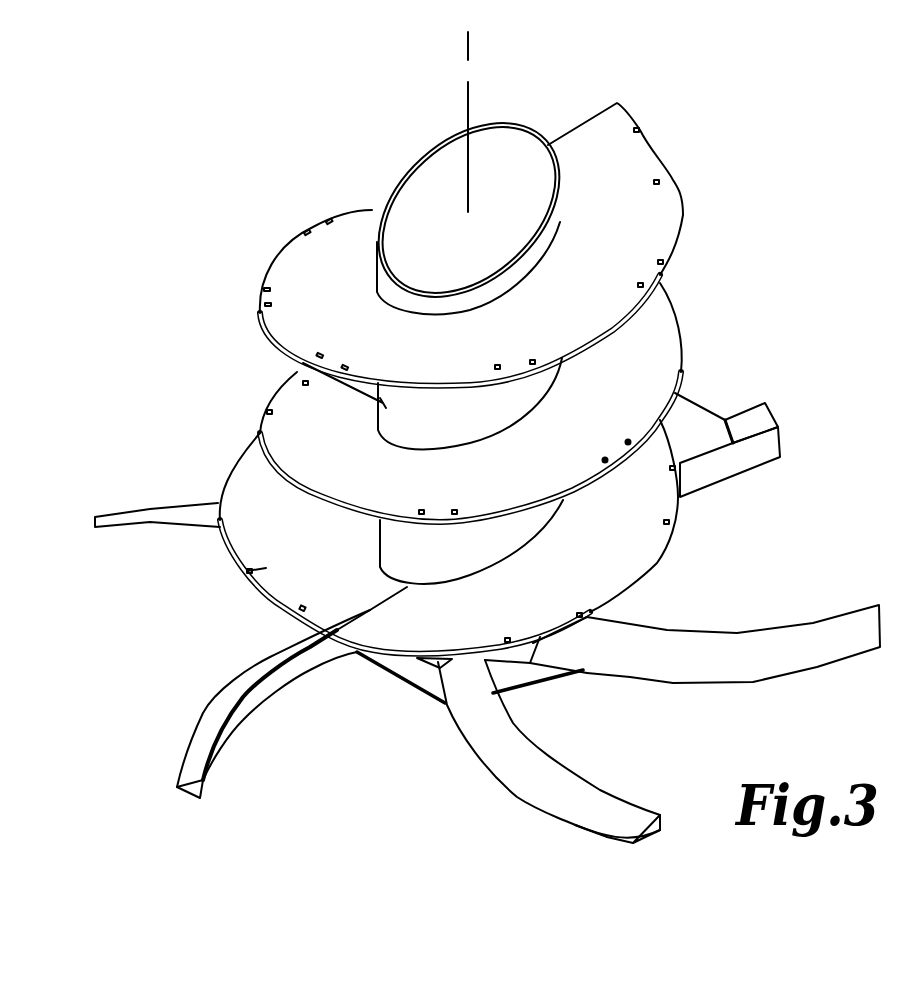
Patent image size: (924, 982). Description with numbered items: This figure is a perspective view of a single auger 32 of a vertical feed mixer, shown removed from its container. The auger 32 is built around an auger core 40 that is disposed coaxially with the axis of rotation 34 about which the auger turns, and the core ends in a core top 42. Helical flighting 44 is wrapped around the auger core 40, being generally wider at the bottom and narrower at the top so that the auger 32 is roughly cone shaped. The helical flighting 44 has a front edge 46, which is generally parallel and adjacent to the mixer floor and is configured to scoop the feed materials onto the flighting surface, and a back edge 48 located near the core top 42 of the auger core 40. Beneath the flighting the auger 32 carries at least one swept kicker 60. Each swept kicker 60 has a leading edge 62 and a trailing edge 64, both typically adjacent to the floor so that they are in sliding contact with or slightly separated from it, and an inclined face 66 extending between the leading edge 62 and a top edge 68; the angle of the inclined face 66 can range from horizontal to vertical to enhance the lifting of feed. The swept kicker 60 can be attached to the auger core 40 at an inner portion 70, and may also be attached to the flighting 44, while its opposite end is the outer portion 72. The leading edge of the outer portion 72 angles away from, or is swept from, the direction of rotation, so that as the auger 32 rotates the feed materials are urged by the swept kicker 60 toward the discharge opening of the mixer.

The auger 32 is at (672, 360).
The axis of rotation 34 is at (476, 75).
The auger core 40 is at (297, 372).
The core top 42 is at (403, 173).
The helical flighting 44 is at (273, 260).
The front edge 46 is at (727, 470).
The back edge 48 is at (601, 108).
The swept kicker 60 is at (630, 677).
The leading edge 62 is at (213, 695).
The trailing edge 64 is at (223, 753).
The inclined face 66 is at (193, 753).
The top edge 68 is at (280, 667).
The inner portion 70 is at (470, 713).
The outer portion 72 is at (597, 812).